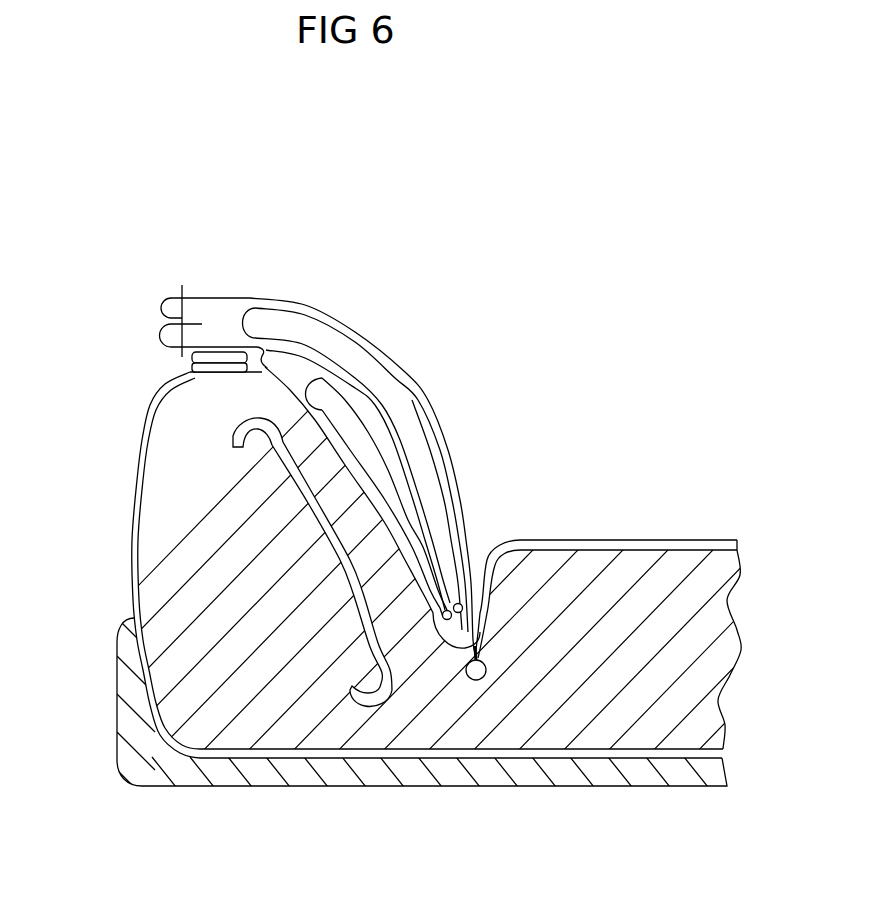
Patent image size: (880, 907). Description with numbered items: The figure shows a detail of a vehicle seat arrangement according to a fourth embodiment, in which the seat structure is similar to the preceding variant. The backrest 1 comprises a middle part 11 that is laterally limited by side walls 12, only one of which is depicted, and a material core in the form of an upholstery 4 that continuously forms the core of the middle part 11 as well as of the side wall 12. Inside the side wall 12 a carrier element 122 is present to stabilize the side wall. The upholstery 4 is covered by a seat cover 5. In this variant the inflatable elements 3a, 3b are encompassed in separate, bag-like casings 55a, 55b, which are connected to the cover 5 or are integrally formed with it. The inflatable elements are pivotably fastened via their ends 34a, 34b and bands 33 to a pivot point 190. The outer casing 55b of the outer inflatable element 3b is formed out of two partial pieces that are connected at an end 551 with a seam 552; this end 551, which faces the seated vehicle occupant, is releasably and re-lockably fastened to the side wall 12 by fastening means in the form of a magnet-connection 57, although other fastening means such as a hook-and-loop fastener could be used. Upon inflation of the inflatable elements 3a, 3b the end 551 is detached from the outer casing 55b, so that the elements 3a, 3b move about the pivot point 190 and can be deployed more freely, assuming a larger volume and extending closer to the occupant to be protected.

The backrest 1 is at (698, 812).
The middle part 11 is at (608, 733).
The side wall 12 is at (118, 503).
The upholstery 4 is at (167, 572).
The seat cover 5 is at (605, 538).
The inflatable element 3a is at (395, 493).
The outer inflatable element 3b is at (385, 390).
The end of inflatable element 34a is at (440, 560).
The end of outer inflatable element 34b is at (458, 562).
The bands 33 is at (471, 638).
The pivot point 190 is at (488, 672).
The carrier element 122 is at (345, 573).
The casing 55a is at (278, 378).
The outer casing 55b is at (252, 297).
The end of casing 551 is at (162, 297).
The seam 552 is at (183, 307).
The magnet-connection 57 is at (203, 359).